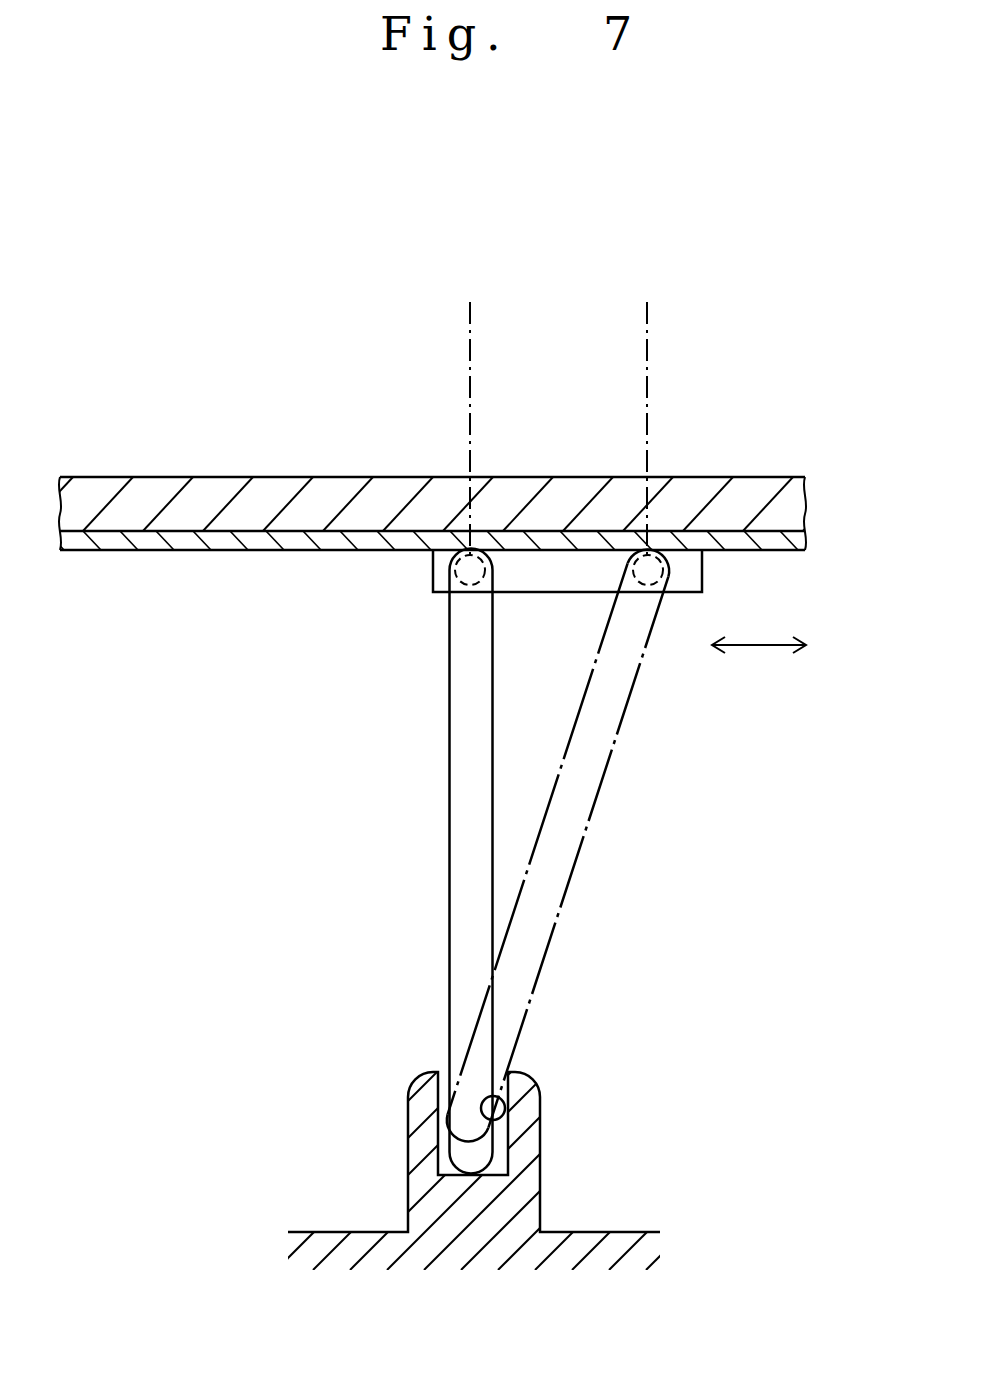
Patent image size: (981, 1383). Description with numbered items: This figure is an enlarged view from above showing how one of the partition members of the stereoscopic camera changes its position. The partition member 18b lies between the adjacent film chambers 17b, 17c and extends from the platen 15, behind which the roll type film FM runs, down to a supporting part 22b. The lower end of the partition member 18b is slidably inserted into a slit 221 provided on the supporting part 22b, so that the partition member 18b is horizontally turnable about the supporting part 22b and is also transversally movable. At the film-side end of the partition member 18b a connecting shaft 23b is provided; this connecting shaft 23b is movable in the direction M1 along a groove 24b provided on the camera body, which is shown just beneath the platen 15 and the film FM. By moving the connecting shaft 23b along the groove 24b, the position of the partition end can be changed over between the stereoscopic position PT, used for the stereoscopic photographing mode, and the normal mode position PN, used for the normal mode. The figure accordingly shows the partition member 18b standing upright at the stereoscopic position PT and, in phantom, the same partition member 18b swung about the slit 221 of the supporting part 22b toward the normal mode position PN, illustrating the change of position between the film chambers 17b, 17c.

The platen 15 is at (267, 497).
The roll type film FM is at (147, 553).
The groove 24b is at (555, 590).
The stereoscopic position PT is at (463, 413).
The normal mode position PN is at (646, 413).
The partition member 18b is at (463, 771).
The connecting shaft 23b is at (472, 552).
The slit 221 is at (504, 1101).
The supporting part 22b is at (530, 1178).
The direction of movement M1 is at (759, 677).
The film chamber 17b is at (297, 1005).
The film chamber 17c is at (720, 1001).